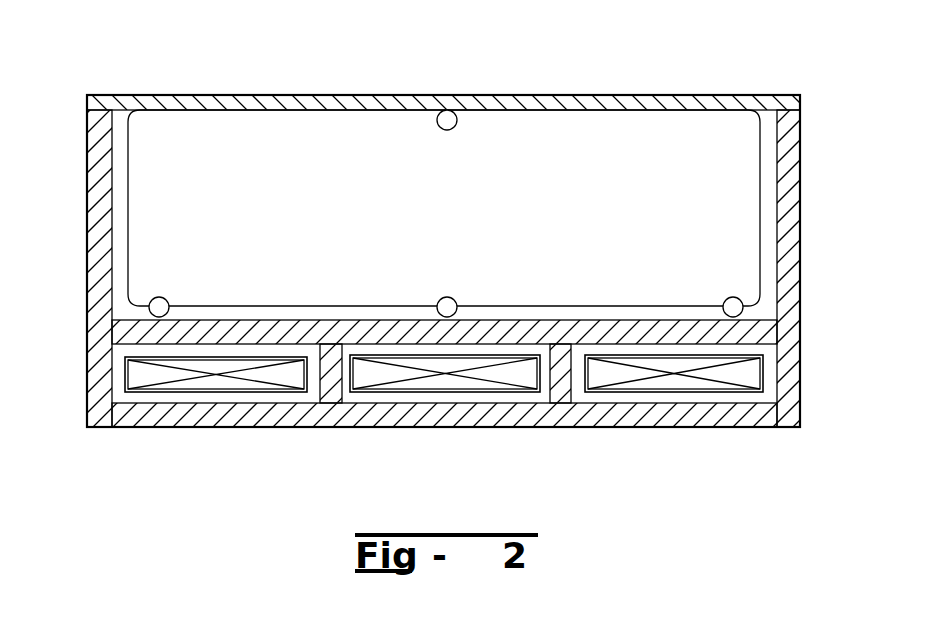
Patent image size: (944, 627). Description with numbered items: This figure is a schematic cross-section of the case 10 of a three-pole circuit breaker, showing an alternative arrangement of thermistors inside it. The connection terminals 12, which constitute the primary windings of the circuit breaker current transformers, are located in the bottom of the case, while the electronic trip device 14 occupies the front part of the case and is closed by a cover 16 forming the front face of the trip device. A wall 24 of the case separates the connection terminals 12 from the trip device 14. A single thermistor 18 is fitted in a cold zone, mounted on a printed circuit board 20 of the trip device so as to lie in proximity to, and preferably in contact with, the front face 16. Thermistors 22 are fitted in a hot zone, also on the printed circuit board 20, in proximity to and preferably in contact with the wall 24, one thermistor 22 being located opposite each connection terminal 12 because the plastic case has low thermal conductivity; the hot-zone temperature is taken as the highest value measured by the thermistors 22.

The case 10 is at (100, 262).
The connection terminals 12 is at (215, 383).
The electronic trip device 14 is at (768, 228).
The cover 16 is at (551, 102).
The thermistor 18 is at (454, 111).
The printed circuit board 20 is at (740, 158).
The thermistors 22 is at (160, 297).
The wall 24 is at (757, 330).